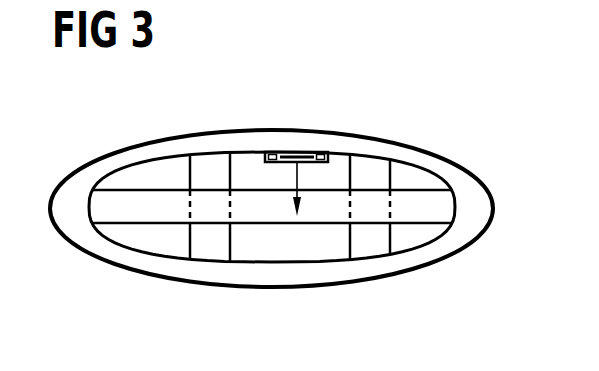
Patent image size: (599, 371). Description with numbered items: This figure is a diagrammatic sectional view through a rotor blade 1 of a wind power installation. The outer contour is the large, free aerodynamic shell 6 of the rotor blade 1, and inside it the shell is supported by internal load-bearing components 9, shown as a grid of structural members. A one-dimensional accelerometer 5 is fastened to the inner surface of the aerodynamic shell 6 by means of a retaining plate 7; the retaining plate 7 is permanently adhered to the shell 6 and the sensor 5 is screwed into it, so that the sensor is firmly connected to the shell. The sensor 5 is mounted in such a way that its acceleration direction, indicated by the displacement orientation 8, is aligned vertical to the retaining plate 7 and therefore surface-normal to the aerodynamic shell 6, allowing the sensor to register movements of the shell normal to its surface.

The rotor blade 1 is at (431, 135).
The accelerometer 5 is at (290, 150).
The aerodynamic shell 6 is at (112, 159).
The retaining plate 7 is at (318, 150).
The displacement orientation 8 is at (293, 183).
The load-bearing components 9 is at (380, 177).